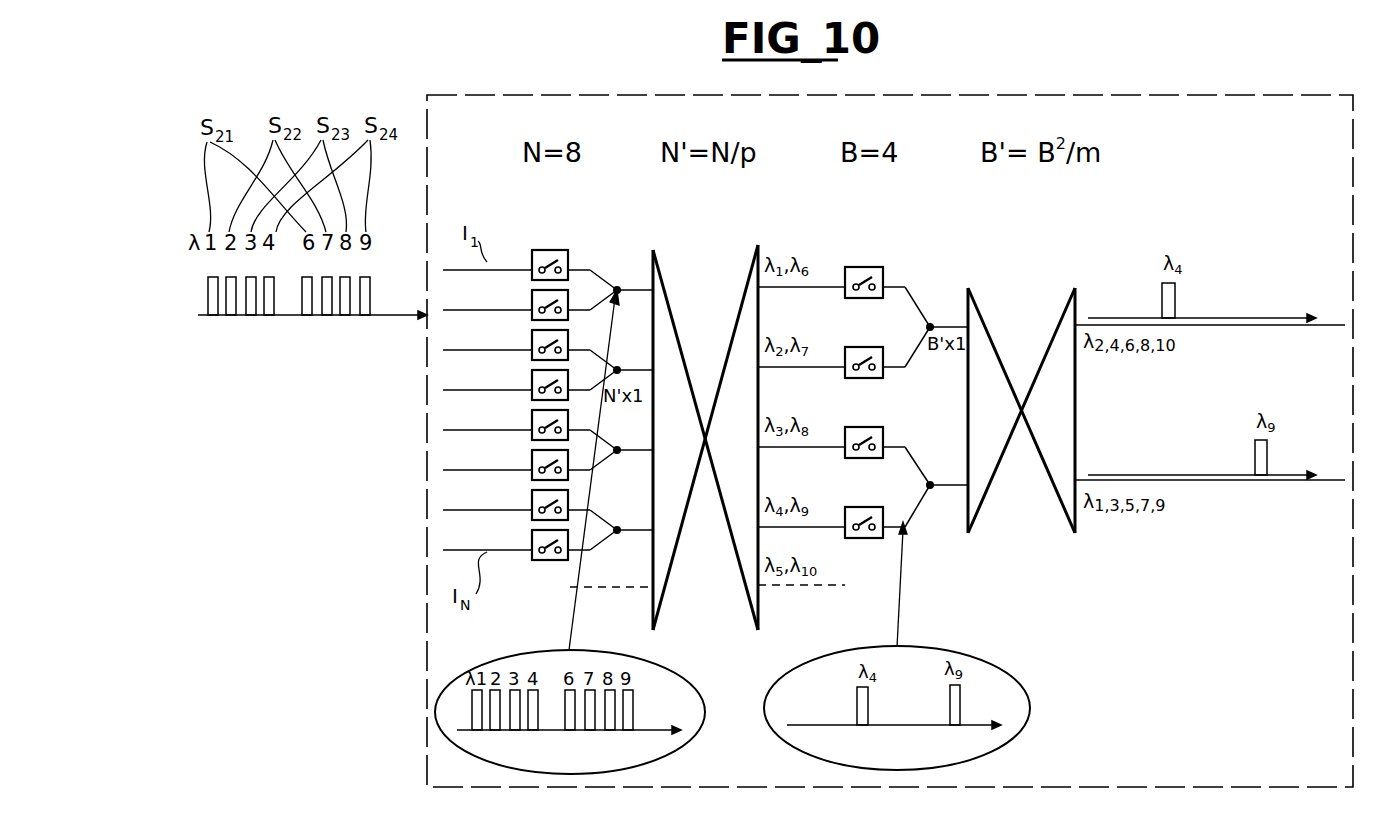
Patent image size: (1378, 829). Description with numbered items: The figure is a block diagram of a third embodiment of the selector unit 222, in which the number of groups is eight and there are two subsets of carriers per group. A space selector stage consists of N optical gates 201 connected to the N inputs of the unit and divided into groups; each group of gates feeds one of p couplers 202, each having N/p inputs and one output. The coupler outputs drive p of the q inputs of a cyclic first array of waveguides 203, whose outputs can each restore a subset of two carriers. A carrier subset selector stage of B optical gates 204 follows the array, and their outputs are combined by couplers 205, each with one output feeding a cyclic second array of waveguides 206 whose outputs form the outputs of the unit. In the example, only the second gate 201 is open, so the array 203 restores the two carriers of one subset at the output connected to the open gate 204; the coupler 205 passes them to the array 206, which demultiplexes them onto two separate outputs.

The optical gate 201 is at (550, 250).
The coupler 202 is at (632, 563).
The cyclic first array of waveguides 203 is at (672, 300).
The optical gate 204 is at (858, 267).
The coupler 205 is at (934, 480).
The cyclic second array of waveguides 206 is at (990, 337).
The selector unit 222 is at (1074, 94).